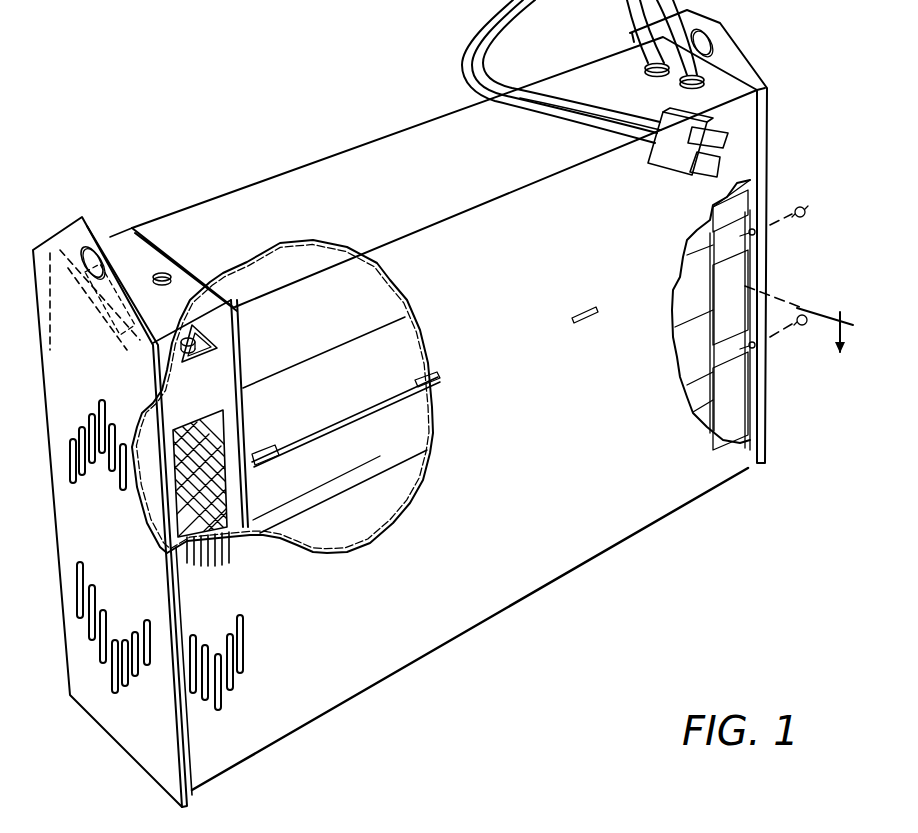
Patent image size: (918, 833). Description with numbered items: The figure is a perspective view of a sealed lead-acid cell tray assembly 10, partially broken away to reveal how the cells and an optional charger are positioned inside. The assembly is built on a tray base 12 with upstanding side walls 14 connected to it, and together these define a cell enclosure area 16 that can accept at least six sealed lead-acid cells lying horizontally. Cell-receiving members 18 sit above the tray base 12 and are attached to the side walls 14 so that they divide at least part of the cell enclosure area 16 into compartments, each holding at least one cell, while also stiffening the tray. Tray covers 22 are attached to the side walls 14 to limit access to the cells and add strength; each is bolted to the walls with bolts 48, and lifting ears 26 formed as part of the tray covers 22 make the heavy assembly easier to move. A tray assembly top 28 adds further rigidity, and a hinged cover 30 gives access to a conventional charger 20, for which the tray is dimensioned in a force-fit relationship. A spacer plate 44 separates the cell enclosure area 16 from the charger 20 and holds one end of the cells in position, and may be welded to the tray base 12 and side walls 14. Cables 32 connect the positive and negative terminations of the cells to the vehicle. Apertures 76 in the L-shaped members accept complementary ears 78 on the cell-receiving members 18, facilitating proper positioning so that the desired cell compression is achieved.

The sealed lead-acid cell tray assembly 10 is at (218, 148).
The tray base 12 is at (442, 648).
The upstanding side walls 14 is at (512, 521).
The cell enclosure area 16 is at (362, 325).
The cell-receiving members 18 is at (387, 400).
The charger 20 is at (215, 405).
The tray covers 22 is at (77, 534).
The lifting ears 26 is at (70, 240).
The tray assembly top 28 is at (400, 190).
The hinged cover 30 is at (178, 318).
The cables 32 is at (467, 55).
The spacer plate 44 is at (220, 326).
The bolts 48 is at (803, 308).
The apertures 76 is at (588, 316).
The ears 78 is at (407, 380).